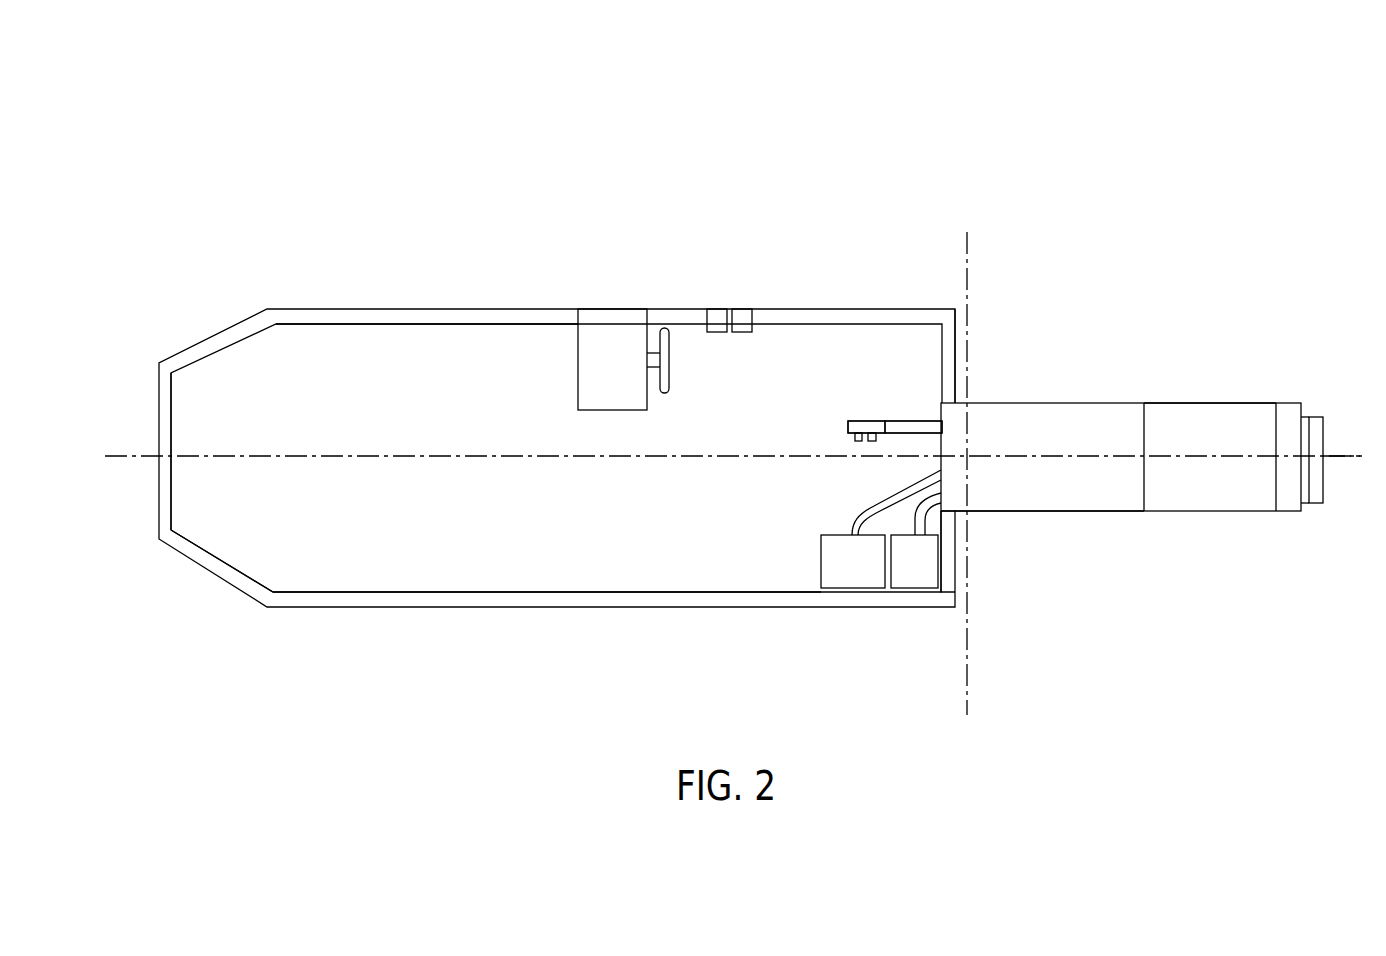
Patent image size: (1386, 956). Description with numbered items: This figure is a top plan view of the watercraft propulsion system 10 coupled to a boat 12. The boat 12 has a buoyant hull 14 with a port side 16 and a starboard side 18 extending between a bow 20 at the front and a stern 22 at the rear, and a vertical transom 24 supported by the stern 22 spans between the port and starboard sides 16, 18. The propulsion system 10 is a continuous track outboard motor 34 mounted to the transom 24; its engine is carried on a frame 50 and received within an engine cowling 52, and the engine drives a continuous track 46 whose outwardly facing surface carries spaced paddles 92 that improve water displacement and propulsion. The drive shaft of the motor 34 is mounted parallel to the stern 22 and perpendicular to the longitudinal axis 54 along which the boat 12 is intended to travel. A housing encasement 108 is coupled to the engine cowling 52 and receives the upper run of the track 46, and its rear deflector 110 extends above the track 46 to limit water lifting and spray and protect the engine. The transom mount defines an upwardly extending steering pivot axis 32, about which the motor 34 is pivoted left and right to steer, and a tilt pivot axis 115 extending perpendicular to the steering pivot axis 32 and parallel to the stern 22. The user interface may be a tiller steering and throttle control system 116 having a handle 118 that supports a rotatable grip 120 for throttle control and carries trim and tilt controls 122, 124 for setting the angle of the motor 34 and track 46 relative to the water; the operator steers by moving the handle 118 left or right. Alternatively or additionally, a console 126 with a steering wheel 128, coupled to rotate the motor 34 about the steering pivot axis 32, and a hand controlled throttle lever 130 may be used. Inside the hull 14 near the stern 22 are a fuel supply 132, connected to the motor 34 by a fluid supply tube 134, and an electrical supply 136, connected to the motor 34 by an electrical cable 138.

The watercraft propulsion system 10 is at (1040, 130).
The boat 12 is at (352, 175).
The hull 14 is at (404, 599).
The port side 16 is at (601, 608).
The starboard side 18 is at (539, 306).
The bow 20 is at (162, 493).
The stern 22 is at (956, 585).
The transom 24 is at (950, 349).
The steering pivot axis 32 is at (973, 460).
The continuous track outboard motor 34 is at (1070, 385).
The continuous track 46 is at (1306, 502).
The frame 50 is at (1104, 502).
The engine cowling 52 is at (1116, 407).
The longitudinal axis 54 is at (1345, 450).
The paddles 92 is at (1318, 494).
The housing encasement 108 is at (1220, 409).
The rear deflector 110 is at (1285, 409).
The tilt pivot axis 115 is at (972, 249).
The tiller steering and throttle control system 116 is at (890, 395).
The handle 118 is at (905, 420).
The grip 120 is at (860, 422).
The trim control 122 is at (858, 442).
The tilt control 124 is at (871, 442).
The console 126 is at (615, 300).
The steering wheel 128 is at (665, 325).
The throttle lever 130 is at (730, 309).
The fuel supply 132 is at (853, 589).
The fluid supply tube 134 is at (856, 520).
The electrical supply 136 is at (915, 589).
The electrical cable 138 is at (928, 522).